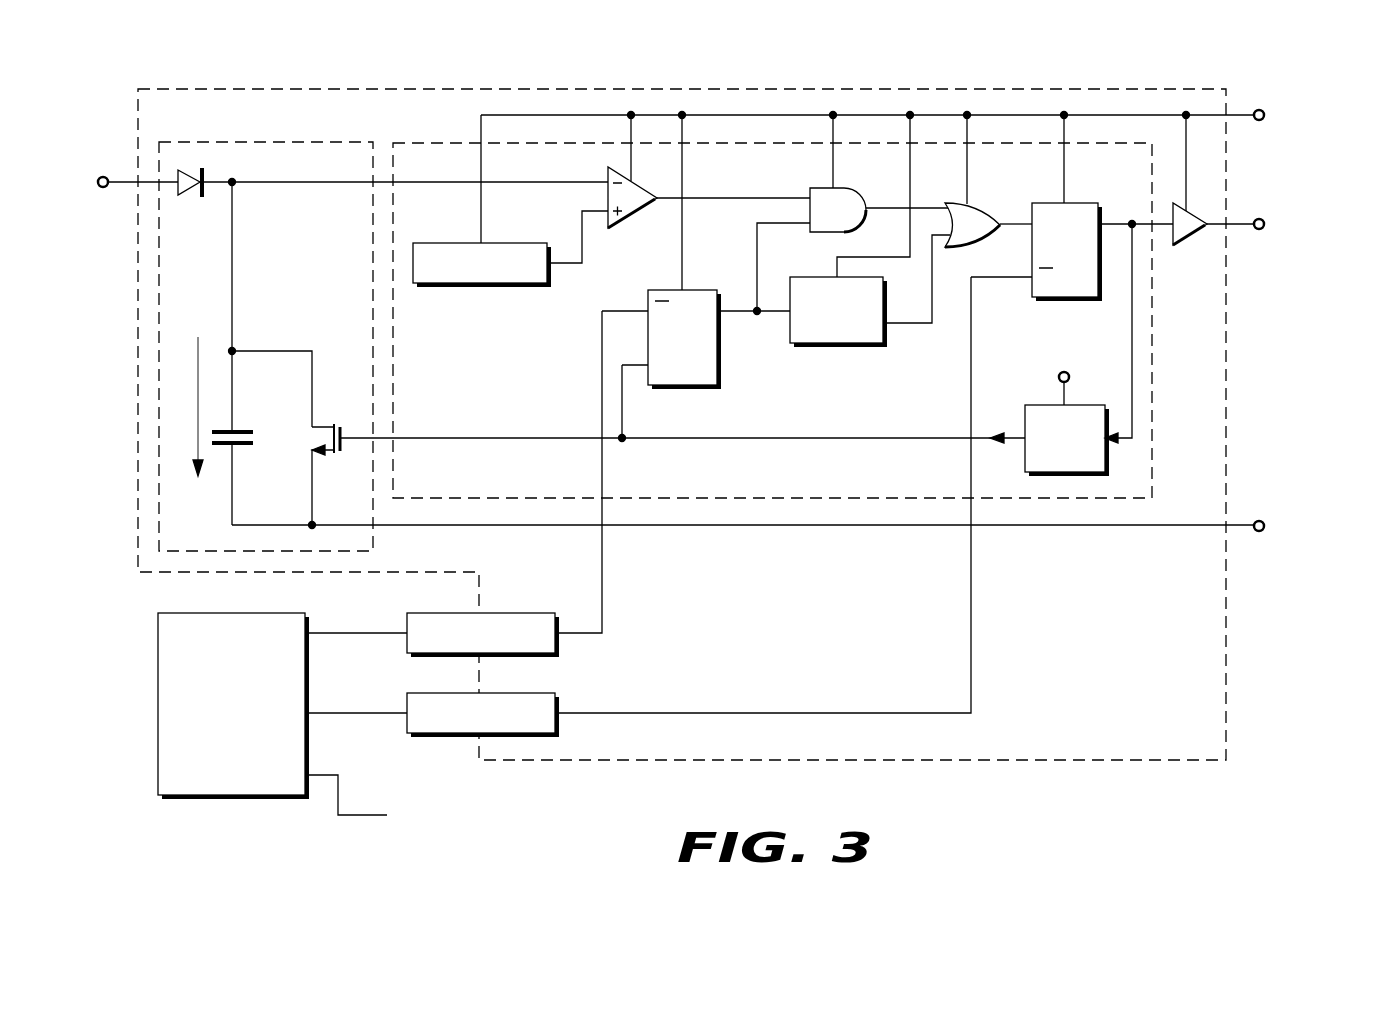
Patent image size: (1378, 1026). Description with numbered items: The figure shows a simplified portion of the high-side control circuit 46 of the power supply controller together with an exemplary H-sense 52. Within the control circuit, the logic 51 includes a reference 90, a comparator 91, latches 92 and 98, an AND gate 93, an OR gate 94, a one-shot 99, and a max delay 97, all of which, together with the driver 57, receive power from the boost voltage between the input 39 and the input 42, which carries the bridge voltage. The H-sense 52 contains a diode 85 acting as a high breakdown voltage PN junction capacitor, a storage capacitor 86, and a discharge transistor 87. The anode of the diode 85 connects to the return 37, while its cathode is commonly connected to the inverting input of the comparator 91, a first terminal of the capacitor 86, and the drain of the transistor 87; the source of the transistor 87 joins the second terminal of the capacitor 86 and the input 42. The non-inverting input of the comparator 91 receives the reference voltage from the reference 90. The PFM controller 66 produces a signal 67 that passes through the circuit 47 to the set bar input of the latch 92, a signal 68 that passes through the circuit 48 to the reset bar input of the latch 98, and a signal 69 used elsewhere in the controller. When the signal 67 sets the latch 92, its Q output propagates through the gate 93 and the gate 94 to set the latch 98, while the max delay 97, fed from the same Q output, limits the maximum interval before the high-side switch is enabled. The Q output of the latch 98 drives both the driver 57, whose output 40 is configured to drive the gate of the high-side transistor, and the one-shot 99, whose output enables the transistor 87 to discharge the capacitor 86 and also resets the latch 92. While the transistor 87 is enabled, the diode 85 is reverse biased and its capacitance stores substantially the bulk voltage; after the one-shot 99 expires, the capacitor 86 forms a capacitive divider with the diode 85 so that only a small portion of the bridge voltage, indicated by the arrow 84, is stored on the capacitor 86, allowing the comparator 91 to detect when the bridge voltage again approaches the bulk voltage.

The return 37 is at (97, 182).
The input 39 is at (1261, 110).
The output 40 is at (1265, 224).
The input 42 is at (1260, 521).
The high-side control circuit 46 is at (1227, 690).
The circuit 47 is at (521, 613).
The circuit 48 is at (438, 735).
The logic 51 is at (1152, 475).
The H-sense 52 is at (270, 142).
The driver 57 is at (1192, 240).
The PFM controller 66 is at (158, 700).
The signal 67 is at (354, 633).
The signal 68 is at (354, 714).
The signal 69 is at (363, 814).
The arrow 84 is at (196, 473).
The diode 85 is at (196, 200).
The capacitor 86 is at (247, 428).
The discharge transistor 87 is at (343, 455).
The reference 90 is at (479, 285).
The comparator 91 is at (638, 222).
The latch 92 is at (699, 290).
The AND gate 93 is at (861, 199).
The OR gate 94 is at (989, 210).
The max delay 97 is at (838, 345).
The latch 98 is at (1083, 205).
The one-shot 99 is at (1096, 405).